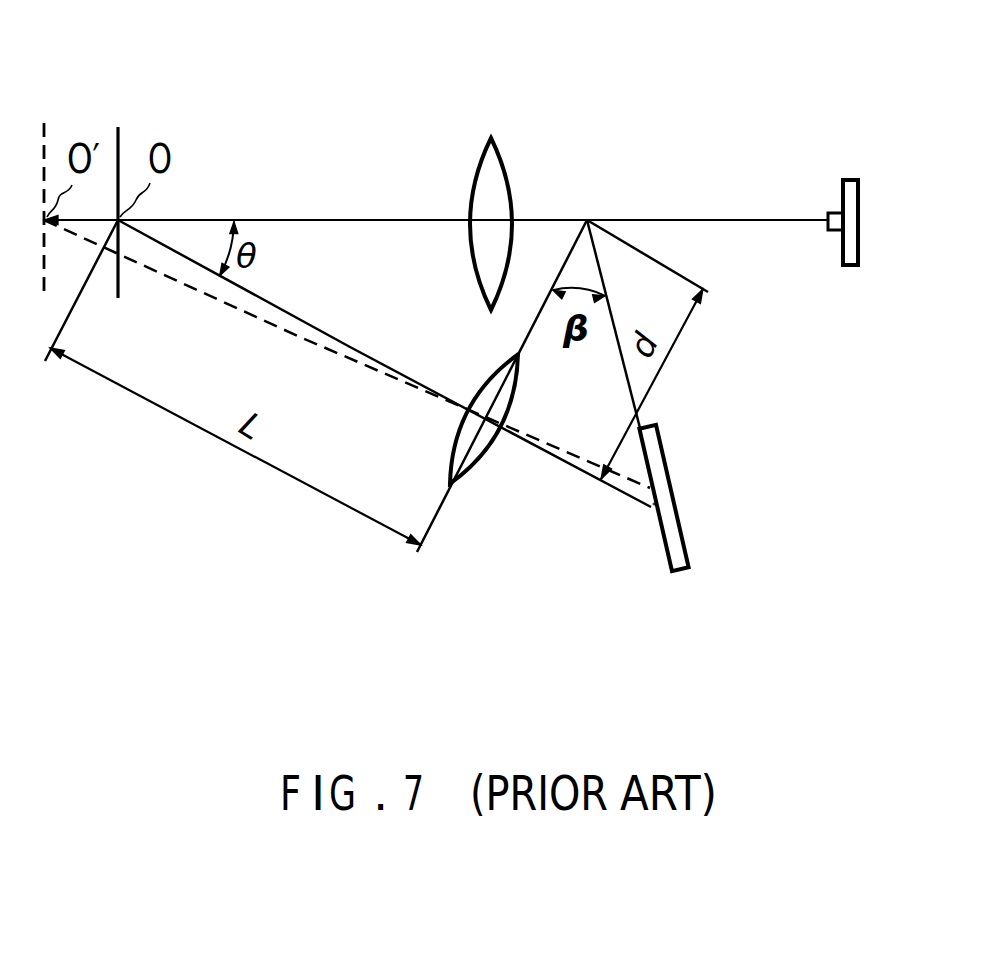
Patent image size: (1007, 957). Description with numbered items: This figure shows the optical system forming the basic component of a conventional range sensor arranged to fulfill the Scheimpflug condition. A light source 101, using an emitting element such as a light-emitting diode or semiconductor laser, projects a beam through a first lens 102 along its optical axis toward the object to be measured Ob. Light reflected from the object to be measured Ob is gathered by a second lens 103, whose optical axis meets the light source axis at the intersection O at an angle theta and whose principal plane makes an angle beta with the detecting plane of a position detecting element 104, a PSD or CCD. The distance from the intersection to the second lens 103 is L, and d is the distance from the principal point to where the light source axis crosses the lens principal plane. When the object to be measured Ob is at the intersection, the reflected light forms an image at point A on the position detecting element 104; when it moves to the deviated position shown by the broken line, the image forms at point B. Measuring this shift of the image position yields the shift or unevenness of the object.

The light source 101 is at (850, 183).
The first lens 102 is at (505, 195).
The second lens 103 is at (476, 464).
The position detecting element 104 is at (668, 550).
The object to be measured Ob is at (122, 134).
The point A is at (656, 504).
The point B is at (655, 484).